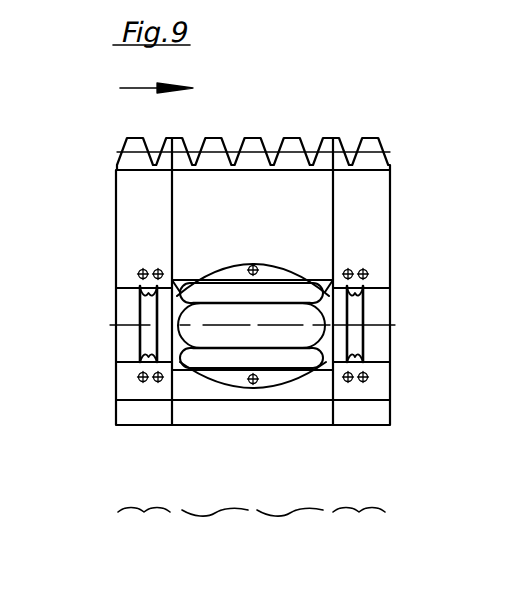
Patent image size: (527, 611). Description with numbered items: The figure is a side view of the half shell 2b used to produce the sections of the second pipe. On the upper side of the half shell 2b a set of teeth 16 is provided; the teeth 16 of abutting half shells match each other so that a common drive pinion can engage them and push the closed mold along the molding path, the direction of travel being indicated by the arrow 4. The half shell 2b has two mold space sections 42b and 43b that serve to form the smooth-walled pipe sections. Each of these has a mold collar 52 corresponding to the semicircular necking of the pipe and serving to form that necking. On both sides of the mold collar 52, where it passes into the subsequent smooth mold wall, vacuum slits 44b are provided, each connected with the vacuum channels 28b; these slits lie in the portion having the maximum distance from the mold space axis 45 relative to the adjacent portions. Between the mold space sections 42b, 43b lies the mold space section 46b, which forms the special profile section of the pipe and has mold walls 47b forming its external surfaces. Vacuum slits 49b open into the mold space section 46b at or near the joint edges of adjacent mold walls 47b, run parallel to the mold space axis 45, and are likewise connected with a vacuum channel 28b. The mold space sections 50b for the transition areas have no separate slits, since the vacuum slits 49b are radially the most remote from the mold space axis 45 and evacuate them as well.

The half shell 2b is at (0, 125).
The direction of movement 4 is at (156, 76).
The set of teeth 16 is at (288, 150).
The vacuum channels 28b is at (140, 378).
The mold space section 42b is at (146, 423).
The mold space section 43b is at (363, 423).
The vacuum slits 44b is at (140, 333).
The mold space axis 45 is at (363, 342).
The mold space section 46b is at (252, 411).
The mold walls 47b is at (208, 292).
The vacuum slits 49b is at (223, 275).
The mold space section 50b is at (177, 292).
The mold collar 52 is at (140, 282).